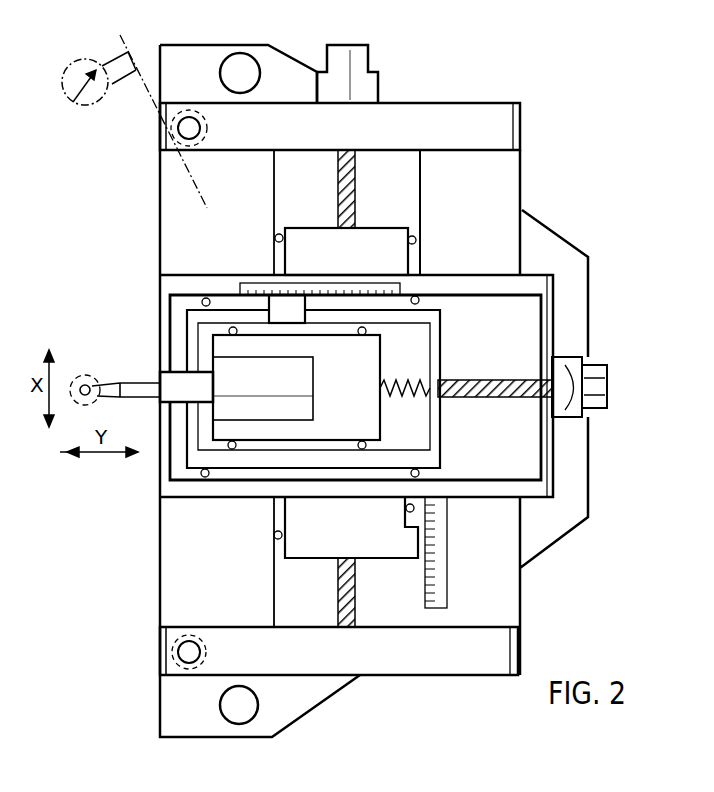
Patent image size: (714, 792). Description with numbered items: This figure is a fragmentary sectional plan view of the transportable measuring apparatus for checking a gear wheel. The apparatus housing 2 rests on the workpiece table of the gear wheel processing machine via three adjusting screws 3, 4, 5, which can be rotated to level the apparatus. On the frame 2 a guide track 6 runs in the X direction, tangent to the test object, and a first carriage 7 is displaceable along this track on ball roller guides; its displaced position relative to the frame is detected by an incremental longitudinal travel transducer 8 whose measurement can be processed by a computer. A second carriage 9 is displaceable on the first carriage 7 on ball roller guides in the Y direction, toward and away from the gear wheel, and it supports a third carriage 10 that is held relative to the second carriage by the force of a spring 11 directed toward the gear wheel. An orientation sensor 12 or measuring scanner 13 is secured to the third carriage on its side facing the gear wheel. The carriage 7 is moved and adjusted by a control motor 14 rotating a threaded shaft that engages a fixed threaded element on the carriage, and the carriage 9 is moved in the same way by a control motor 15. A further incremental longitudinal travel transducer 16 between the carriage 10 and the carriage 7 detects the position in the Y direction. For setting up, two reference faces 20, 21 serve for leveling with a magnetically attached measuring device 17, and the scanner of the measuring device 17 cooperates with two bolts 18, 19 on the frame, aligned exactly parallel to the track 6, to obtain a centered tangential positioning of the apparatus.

The apparatus housing 2 is at (537, 235).
The adjusting screw 3 is at (250, 708).
The adjusting screw 4 is at (570, 405).
The adjusting screw 5 is at (255, 70).
The guide track 6 is at (422, 190).
The first carriage 7 is at (302, 240).
The incremental longitudinal travel transducer 8 is at (438, 540).
The second carriage 9 is at (193, 305).
The third carriage 10 is at (215, 340).
The spring 11 is at (432, 380).
The orientation sensor 12 is at (85, 400).
The measuring scanner 13 is at (90, 382).
The control motor 14 is at (370, 88).
The control motor 15 is at (596, 378).
The incremental longitudinal travel transducer 16 is at (315, 291).
The measuring device 17 is at (82, 66).
The bolt 18 is at (170, 660).
The bolt 19 is at (167, 142).
The reference face 20 is at (500, 125).
The reference face 21 is at (425, 655).